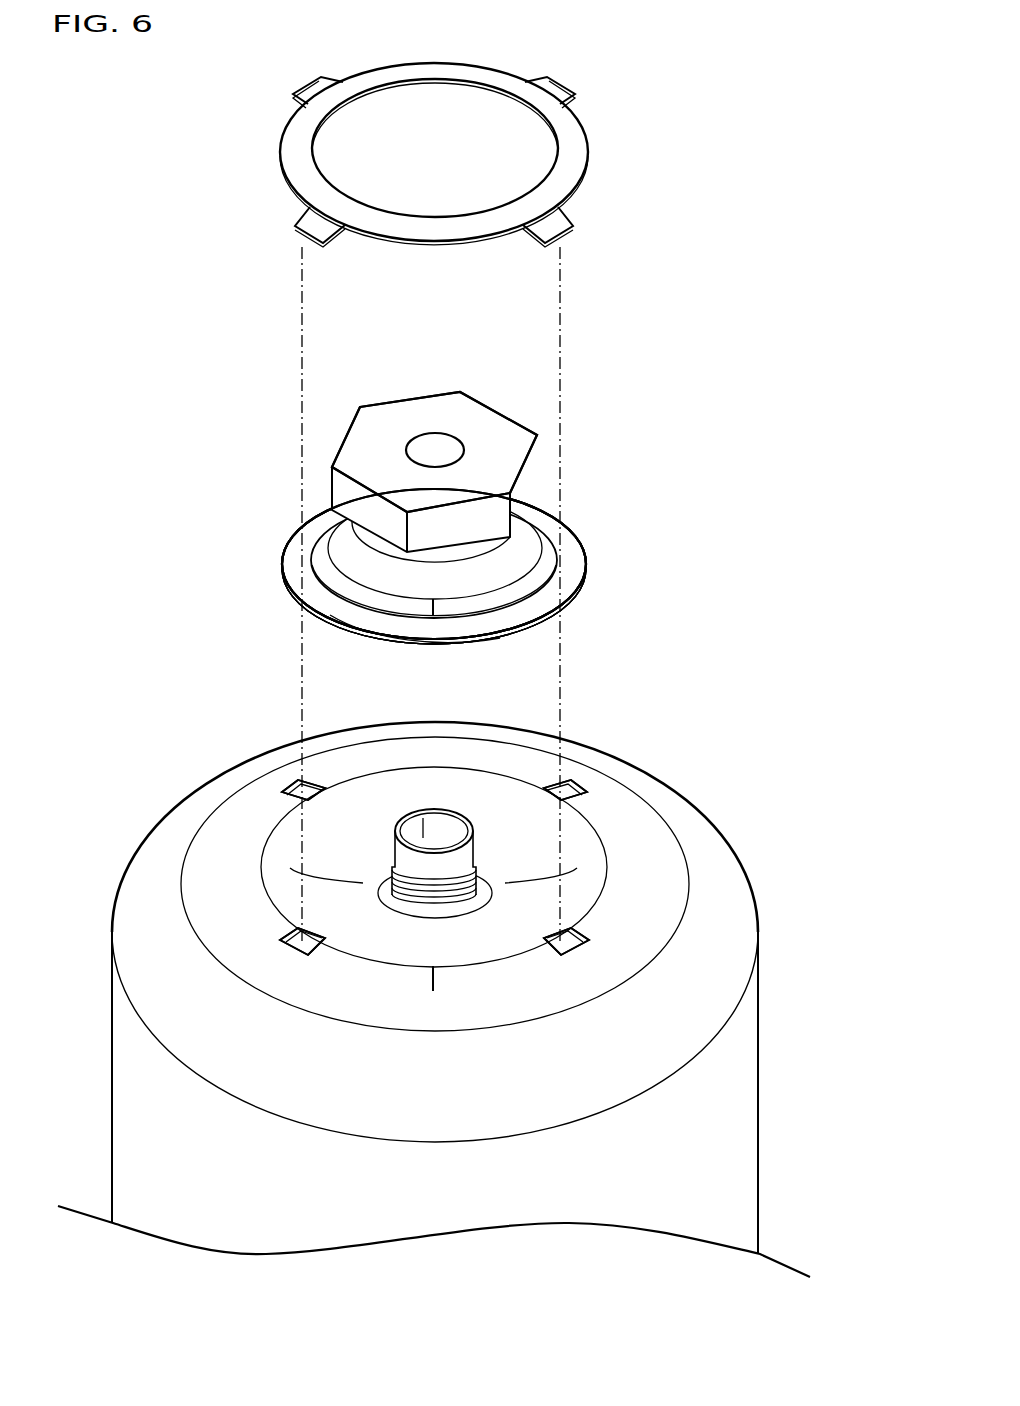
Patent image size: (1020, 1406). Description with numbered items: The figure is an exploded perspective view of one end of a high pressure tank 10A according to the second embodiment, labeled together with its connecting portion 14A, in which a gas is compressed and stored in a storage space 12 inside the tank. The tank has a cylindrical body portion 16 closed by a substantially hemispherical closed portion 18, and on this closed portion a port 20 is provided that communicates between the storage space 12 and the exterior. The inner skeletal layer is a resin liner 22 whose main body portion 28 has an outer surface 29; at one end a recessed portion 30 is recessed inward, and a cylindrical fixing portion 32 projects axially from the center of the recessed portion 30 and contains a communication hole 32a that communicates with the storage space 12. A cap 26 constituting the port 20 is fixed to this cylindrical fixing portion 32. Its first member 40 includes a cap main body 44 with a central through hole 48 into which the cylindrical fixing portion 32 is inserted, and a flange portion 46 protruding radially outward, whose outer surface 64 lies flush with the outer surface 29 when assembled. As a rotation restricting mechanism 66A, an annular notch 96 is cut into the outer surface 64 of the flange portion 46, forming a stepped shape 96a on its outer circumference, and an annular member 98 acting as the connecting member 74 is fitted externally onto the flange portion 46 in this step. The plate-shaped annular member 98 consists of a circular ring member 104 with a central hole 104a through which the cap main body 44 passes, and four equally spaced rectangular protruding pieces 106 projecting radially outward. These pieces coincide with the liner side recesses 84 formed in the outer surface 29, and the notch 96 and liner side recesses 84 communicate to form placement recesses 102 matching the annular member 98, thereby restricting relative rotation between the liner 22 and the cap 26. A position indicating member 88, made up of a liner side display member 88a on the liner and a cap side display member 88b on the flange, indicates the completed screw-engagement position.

The high pressure tank 10A is at (425, 643).
The connecting portion 14A is at (145, 86).
The storage space 12 is at (138, 1119).
The body portion 16 is at (112, 1035).
The closed portion 18 is at (158, 860).
The liner 22 is at (164, 814).
The cap 26 is at (434, 420).
The port 20 is at (447, 383).
The main body portion 28 is at (612, 807).
The outer surface 29 is at (501, 854).
The recessed portion 30 is at (388, 790).
The cylindrical fixing portion 32 is at (397, 824).
The communication hole 32a is at (443, 832).
The first member 40 is at (384, 494).
The cap main body 44 is at (388, 412).
The flange portion 46 is at (312, 535).
The through hole 48 is at (447, 442).
The outer surface 64 is at (520, 583).
The rotation restricting mechanism 66A is at (600, 147).
The connecting member 74 is at (278, 143).
The liner side recesses 84 is at (297, 788).
The position indicating member 88 is at (469, 847).
The liner side display member 88a is at (435, 975).
The cap side display member 88b is at (437, 605).
The notch 96 is at (570, 535).
The stepped shape 96a is at (397, 612).
The annular member 98 is at (419, 128).
The placement recesses 102 is at (444, 773).
The ring member 104 is at (432, 72).
The central hole 104a is at (513, 173).
The protruding pieces 106 is at (553, 90).